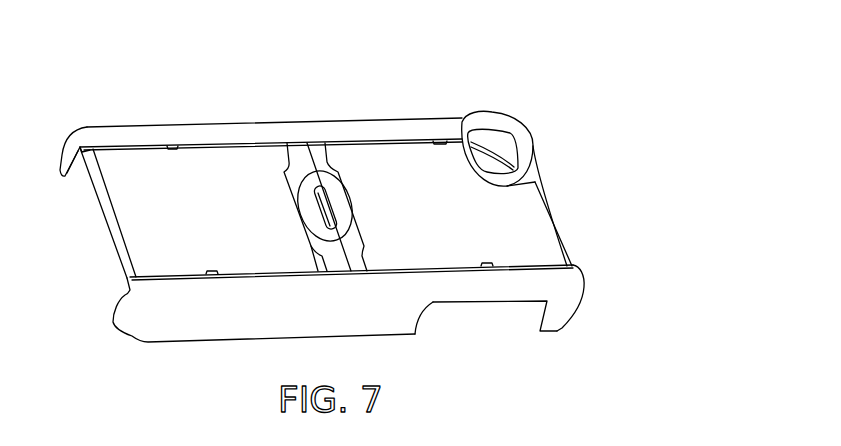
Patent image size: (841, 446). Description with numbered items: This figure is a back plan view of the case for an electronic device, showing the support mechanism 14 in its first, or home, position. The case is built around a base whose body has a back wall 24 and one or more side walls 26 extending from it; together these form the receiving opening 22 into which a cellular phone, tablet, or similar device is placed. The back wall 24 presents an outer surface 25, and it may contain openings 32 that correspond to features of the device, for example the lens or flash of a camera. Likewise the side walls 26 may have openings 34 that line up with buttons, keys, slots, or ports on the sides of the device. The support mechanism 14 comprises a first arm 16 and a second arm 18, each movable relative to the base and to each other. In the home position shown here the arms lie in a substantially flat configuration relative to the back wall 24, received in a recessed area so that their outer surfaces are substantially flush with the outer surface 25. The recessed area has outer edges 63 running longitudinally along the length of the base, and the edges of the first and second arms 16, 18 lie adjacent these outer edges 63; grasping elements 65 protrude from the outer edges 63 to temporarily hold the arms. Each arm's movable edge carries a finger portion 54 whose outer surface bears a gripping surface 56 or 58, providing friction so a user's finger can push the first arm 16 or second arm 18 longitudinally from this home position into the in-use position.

The support mechanism 14 is at (157, 282).
The first arm 16 is at (417, 233).
The second arm 18 is at (166, 245).
The receiving opening 22 is at (105, 243).
The back wall 24 is at (443, 125).
The outer surface 25 is at (88, 135).
The side walls 26 is at (72, 172).
The openings 32 is at (500, 126).
The openings 34 is at (500, 302).
The finger portion 54 is at (300, 203).
The gripping surface 56 is at (332, 188).
The gripping surface 58 is at (318, 227).
The outer edges 63 is at (224, 154).
The grasping elements 65 is at (172, 149).